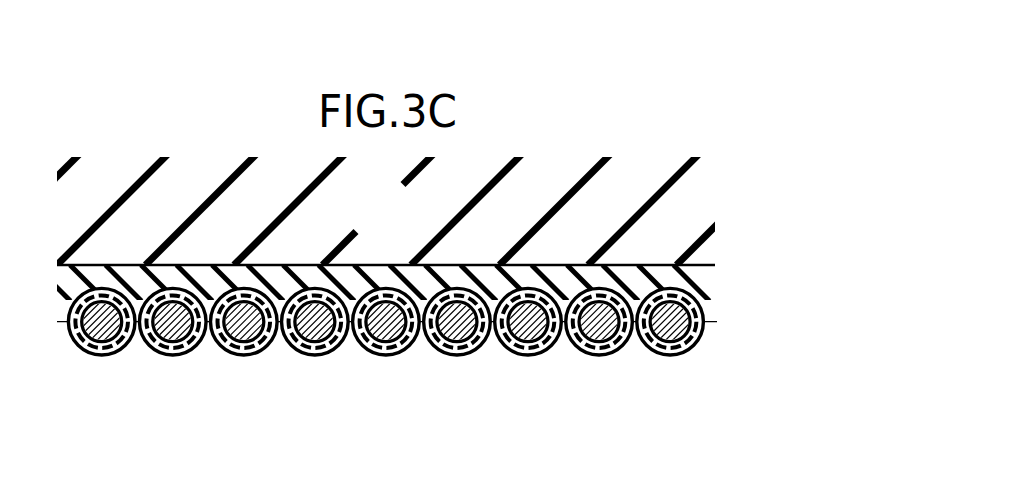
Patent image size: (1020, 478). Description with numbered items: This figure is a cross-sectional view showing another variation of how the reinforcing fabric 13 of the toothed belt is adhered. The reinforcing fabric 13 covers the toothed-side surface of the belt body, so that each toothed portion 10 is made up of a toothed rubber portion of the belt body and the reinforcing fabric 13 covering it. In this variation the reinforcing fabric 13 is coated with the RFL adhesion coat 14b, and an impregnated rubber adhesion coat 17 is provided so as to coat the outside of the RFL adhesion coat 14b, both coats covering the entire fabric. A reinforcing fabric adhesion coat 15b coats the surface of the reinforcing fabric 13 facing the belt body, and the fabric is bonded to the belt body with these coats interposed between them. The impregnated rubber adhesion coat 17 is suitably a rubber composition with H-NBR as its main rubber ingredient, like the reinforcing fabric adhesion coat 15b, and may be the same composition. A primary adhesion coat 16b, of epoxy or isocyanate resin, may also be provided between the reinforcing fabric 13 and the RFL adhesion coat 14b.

The toothed portion 10 is at (405, 223).
The reinforcing fabric 13 is at (386, 372).
The RFL adhesion coat 14b is at (306, 358).
The reinforcing fabric adhesion coat 15b is at (703, 288).
The primary adhesion coat 16b is at (380, 357).
The impregnated rubber adhesion coat 17 is at (448, 360).